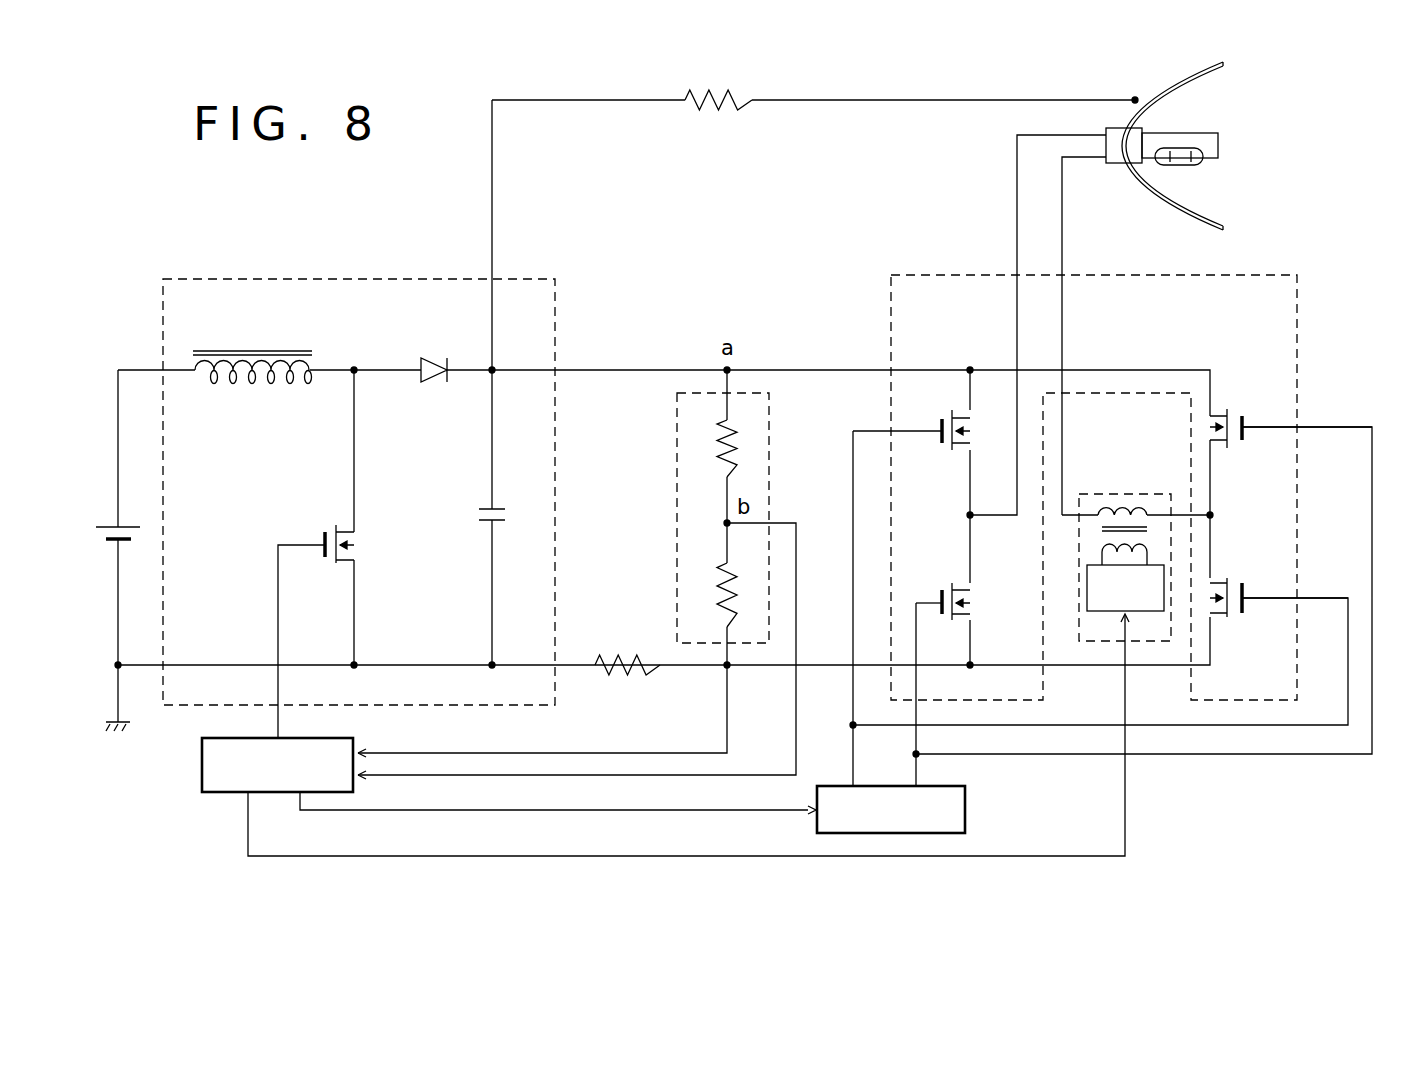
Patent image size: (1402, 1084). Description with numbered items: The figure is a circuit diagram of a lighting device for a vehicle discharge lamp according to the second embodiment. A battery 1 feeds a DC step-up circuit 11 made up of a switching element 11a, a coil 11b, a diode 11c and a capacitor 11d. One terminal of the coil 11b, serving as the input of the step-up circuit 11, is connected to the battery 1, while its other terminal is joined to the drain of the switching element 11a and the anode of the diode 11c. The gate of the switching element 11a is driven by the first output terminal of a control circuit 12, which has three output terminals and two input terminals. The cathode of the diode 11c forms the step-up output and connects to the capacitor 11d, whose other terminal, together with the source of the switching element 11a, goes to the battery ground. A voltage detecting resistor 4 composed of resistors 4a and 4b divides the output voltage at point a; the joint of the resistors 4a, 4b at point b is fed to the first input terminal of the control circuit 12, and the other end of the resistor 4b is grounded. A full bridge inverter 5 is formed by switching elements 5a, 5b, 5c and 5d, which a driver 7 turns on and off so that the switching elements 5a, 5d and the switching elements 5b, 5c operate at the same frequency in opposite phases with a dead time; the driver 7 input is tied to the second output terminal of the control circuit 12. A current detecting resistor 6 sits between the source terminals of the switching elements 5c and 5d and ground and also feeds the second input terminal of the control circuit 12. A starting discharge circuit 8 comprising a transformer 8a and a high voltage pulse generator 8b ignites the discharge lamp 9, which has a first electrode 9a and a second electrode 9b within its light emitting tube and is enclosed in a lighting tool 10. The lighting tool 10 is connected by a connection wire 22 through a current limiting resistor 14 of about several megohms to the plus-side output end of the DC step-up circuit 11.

The battery 1 is at (101, 522).
The voltage detecting resistor 4 is at (672, 427).
The resistor 4a is at (710, 457).
The resistor 4b is at (710, 578).
The full bridge inverter 5 is at (965, 275).
The switching element 5a is at (934, 441).
The switching element 5b is at (1251, 409).
The switching element 5c is at (943, 582).
The switching element 5d is at (1237, 618).
The current detecting resistor 6 is at (638, 677).
The driver 7 is at (965, 806).
The starting discharge circuit 8 is at (1097, 492).
The transformer 8a is at (1155, 535).
The high voltage pulse generator 8b is at (1112, 598).
The discharge lamp 9 is at (1192, 148).
The first electrode 9a is at (1190, 160).
The second electrode 9b is at (1168, 157).
The lighting tool 10 is at (1158, 76).
The DC step-up circuit 11 is at (345, 278).
The switching element 11a is at (317, 535).
The coil 11b is at (262, 388).
The diode 11c is at (430, 394).
The capacitor 11d is at (473, 516).
The control circuit 12 is at (202, 762).
The resistor 14 is at (724, 84).
The connection wire 22 is at (920, 98).